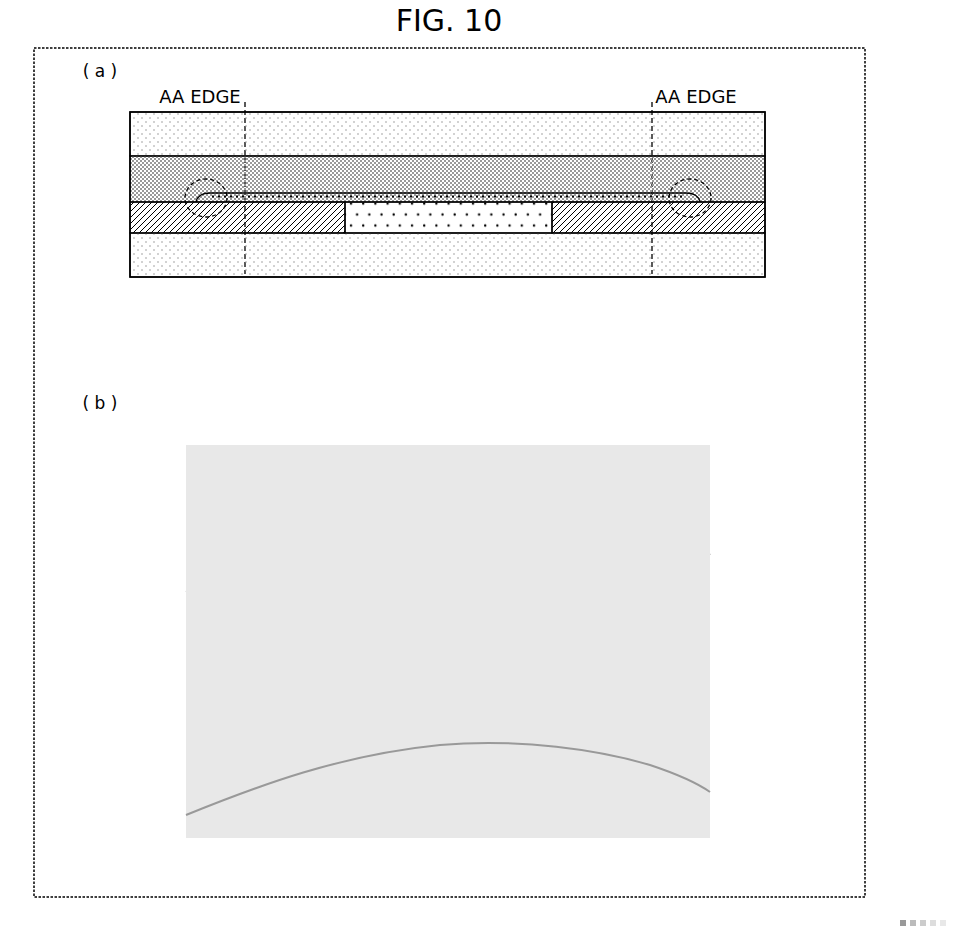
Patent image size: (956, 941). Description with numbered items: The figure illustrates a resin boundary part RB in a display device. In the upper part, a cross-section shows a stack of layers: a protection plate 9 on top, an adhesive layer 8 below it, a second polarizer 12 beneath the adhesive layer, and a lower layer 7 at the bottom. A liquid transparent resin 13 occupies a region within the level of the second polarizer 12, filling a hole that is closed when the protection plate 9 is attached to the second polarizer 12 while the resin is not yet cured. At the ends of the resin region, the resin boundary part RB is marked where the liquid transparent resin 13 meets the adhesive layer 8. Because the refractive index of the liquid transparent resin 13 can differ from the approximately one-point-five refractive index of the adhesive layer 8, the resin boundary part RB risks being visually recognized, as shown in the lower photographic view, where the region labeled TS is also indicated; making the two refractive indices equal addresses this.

The substrate 7 is at (753, 257).
The adhesive layer 8 is at (753, 182).
The protection plate 9 is at (753, 137).
The second polarizer 12 is at (753, 219).
The liquid transparent resin 13 is at (448, 217).
The resin boundary part RB is at (669, 182).
The touch sensor region TS is at (468, 809).